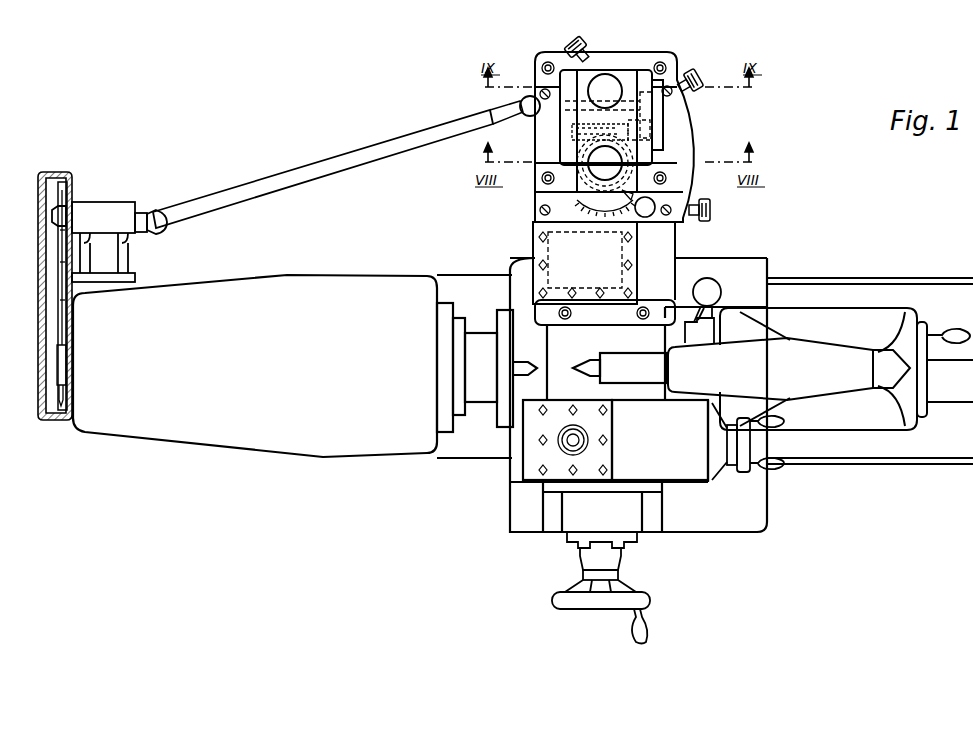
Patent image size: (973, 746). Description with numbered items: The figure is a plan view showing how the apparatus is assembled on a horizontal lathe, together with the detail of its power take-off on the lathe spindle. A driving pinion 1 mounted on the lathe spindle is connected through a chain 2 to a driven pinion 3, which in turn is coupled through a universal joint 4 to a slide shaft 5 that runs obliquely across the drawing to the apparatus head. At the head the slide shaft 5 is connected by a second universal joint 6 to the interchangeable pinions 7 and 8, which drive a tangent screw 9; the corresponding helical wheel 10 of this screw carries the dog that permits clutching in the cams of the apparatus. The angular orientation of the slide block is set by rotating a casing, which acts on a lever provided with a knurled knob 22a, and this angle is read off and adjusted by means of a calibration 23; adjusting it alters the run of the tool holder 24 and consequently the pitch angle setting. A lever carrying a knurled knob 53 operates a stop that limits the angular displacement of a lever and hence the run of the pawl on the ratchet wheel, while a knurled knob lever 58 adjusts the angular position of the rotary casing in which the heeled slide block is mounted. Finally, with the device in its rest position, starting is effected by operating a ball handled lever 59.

The driving pinion 1 is at (66, 395).
The chain 2 is at (58, 285).
The driven pinion 3 is at (70, 188).
The universal joint 4 is at (160, 232).
The slide shaft 5 is at (280, 184).
The universal joint 6 is at (528, 116).
The interchangeable pinion 7 is at (646, 95).
The interchangeable pinion 8 is at (652, 132).
The tangent screw 9 is at (620, 132).
The helical wheel 10 is at (583, 178).
The knurled knob 22a is at (711, 210).
The calibration 23 is at (610, 212).
The tool holder 24 is at (566, 250).
The knurled knob 53 is at (694, 74).
The knurled knob lever 58 is at (572, 48).
The ball handled lever 59 is at (650, 214).